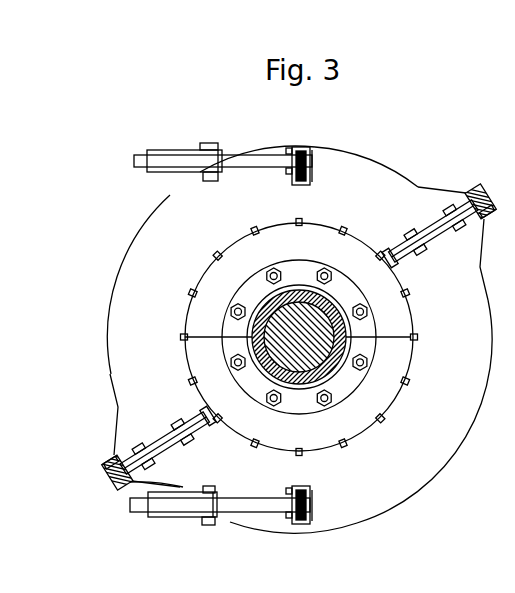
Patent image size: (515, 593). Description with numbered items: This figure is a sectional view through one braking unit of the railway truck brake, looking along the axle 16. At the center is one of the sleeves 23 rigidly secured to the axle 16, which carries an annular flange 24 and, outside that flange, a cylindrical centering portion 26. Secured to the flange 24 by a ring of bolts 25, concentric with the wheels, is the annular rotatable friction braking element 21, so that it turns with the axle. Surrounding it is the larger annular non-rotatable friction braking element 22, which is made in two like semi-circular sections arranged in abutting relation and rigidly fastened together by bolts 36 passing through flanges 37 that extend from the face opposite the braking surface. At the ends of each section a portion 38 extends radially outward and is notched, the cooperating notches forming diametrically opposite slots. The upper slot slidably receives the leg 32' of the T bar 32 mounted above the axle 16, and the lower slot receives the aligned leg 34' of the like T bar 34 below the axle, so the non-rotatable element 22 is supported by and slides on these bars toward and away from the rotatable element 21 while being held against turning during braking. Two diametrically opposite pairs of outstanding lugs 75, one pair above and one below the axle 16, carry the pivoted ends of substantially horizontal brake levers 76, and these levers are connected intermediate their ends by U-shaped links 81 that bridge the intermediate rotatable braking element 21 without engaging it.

The axle 16 is at (324, 362).
The rotatable friction braking element 21 is at (362, 428).
The non-rotatable friction braking element 22 is at (357, 522).
The sleeve 23 is at (346, 338).
The annular flange 24 is at (358, 323).
The bolts 25 is at (312, 413).
The cylindrical centering portion 26 is at (350, 346).
The T bar 32 is at (476, 200).
The leg of T bar 32' is at (497, 222).
The T bar 34 is at (115, 470).
The leg of T bar 34' is at (100, 443).
The bolts 36 is at (435, 215).
The flanges 37 is at (437, 230).
The radially outwardly extending portion 38 is at (457, 195).
The outstanding lugs 75 is at (306, 165).
The brake lever 76 is at (248, 161).
The links 81 is at (179, 170).